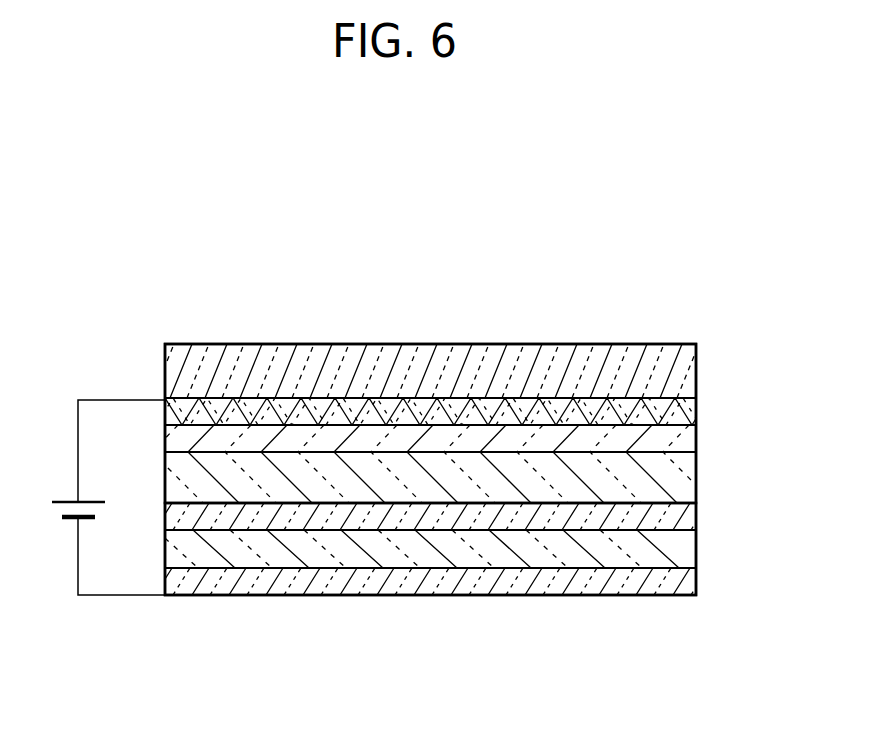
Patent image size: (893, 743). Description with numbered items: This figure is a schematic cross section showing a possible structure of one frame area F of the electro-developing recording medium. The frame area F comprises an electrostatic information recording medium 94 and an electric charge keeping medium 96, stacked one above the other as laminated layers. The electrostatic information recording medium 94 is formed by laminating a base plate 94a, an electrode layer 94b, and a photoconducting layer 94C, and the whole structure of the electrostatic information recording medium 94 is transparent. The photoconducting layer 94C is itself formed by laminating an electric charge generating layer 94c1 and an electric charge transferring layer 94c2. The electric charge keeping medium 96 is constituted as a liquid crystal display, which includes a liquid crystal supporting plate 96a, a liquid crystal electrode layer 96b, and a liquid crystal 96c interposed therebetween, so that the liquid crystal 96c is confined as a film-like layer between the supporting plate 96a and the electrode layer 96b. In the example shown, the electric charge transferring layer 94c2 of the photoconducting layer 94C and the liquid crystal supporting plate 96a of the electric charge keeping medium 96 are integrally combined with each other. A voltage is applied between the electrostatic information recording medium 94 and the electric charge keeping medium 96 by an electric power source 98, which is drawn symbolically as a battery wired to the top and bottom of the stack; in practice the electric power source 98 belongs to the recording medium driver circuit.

The frame area F is at (453, 277).
The electrostatic information recording medium 94 is at (192, 343).
The base plate 94a is at (293, 343).
The electrode layer 94b is at (407, 407).
The photoconducting layer 94C is at (707, 420).
The electric charge generating layer 94c1 is at (515, 433).
The electric charge transferring layer 94c2 is at (618, 477).
The electric charge keeping medium 96 is at (445, 597).
The liquid crystal supporting plate 96a is at (688, 512).
The liquid crystal 96c is at (685, 545).
The liquid crystal electrode layer 96b is at (642, 590).
The electric power source 98 is at (67, 501).